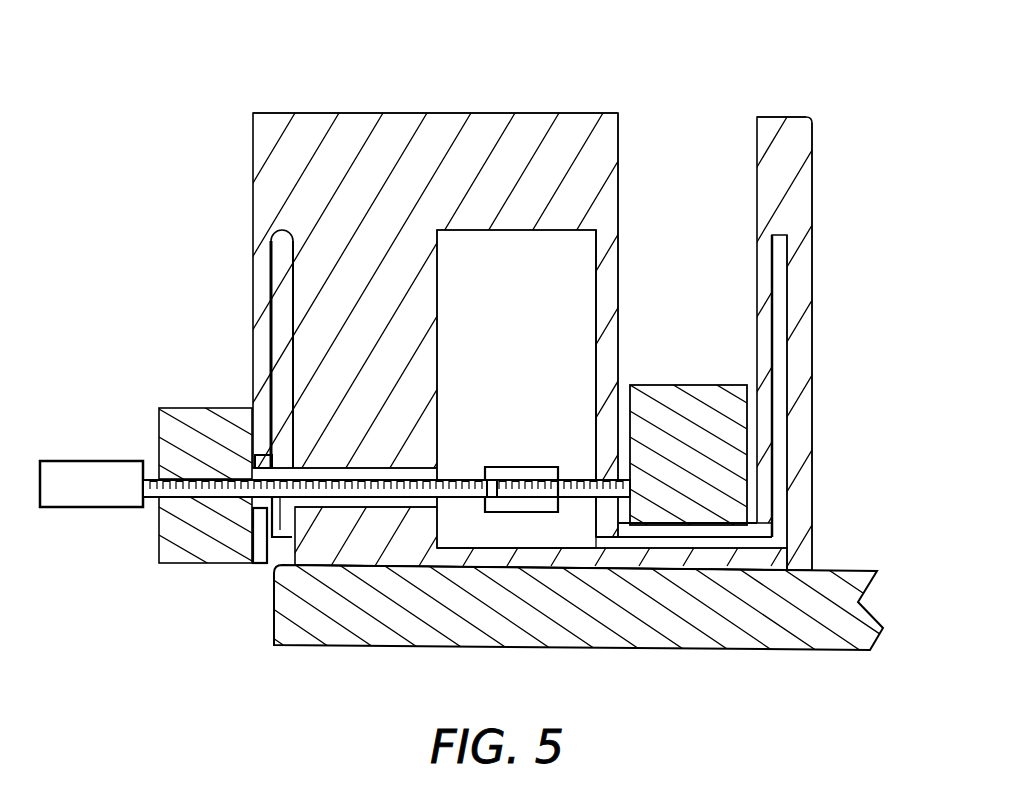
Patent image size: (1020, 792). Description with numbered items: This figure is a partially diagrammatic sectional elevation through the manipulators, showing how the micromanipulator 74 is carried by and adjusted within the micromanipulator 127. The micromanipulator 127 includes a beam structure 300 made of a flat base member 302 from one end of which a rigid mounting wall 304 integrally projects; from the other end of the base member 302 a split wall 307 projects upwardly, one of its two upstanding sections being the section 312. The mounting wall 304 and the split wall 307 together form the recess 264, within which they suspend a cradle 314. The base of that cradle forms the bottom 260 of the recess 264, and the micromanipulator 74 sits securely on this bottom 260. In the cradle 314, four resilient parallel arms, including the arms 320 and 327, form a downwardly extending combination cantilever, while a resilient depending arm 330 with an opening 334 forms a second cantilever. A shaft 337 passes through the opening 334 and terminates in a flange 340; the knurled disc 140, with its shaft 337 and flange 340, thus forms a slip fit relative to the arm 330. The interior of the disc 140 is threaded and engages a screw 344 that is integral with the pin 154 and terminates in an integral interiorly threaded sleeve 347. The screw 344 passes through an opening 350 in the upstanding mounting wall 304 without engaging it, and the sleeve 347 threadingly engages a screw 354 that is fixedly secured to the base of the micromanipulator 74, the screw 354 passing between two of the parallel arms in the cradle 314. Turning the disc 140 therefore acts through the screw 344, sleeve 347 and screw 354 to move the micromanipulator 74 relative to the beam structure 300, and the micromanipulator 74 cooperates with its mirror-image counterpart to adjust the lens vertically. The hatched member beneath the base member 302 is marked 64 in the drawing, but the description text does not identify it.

The micromanipulator 127 is at (431, 80).
The recess 264 is at (700, 121).
The beam structure 300 is at (318, 112).
The rigid mounting wall 304 is at (456, 307).
The flat base member 302 is at (512, 548).
The resilient parallel arm 320 is at (597, 252).
The resilient depending arm 330 is at (262, 306).
The opening 350 is at (420, 467).
The interiorly threaded sleeve 347 is at (525, 467).
The screw 354 is at (586, 508).
The pin 154 is at (95, 461).
The knurled disc 140 is at (185, 408).
The shaft 337 is at (255, 497).
The opening 334 is at (262, 453).
The flange 340 is at (296, 420).
The screw 344 is at (327, 492).
The micromanipulator 74 is at (678, 395).
The resilient parallel arm 327 is at (770, 357).
The upstanding section 312 is at (812, 262).
The split wall 307 is at (806, 337).
The cradle 314 is at (657, 251).
The bottom of recess 260 is at (750, 524).
The base 64 is at (735, 642).